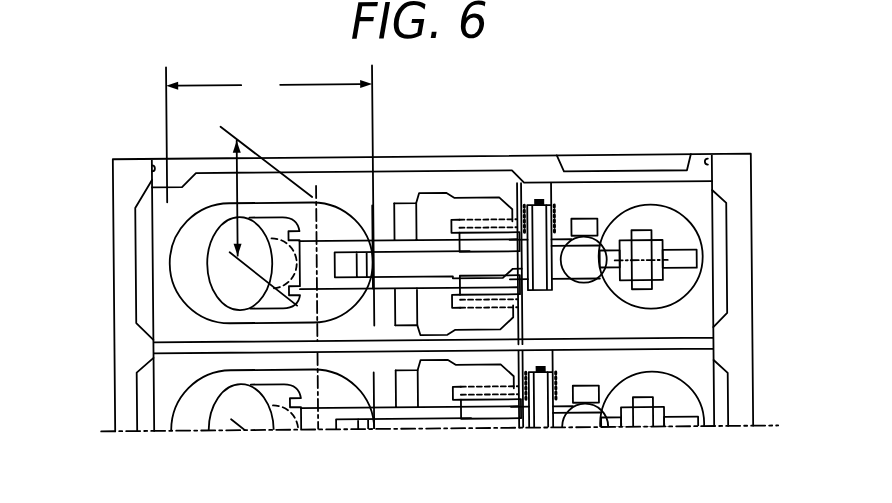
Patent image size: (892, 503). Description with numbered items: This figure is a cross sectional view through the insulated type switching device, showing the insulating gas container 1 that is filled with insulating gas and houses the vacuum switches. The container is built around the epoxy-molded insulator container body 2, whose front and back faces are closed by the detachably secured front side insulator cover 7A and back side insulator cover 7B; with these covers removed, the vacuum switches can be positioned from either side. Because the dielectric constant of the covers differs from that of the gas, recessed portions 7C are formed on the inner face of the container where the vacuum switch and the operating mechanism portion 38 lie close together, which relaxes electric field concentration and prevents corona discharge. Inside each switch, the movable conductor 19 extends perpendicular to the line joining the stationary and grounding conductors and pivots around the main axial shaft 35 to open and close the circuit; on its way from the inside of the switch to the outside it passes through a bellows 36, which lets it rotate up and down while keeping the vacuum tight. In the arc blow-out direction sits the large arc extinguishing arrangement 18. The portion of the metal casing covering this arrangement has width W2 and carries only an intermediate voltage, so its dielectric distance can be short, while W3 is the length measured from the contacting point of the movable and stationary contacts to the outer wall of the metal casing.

The insulating gas container 1 is at (307, 157).
The insulator container body 2 is at (527, 171).
The front side insulator cover 7A is at (130, 328).
The back side insulator cover 7B is at (737, 356).
The recessed portions 7C is at (148, 400).
The arc extinguishing arrangement 18 is at (183, 259).
The movable conductor 19 is at (383, 256).
The main axial shaft 35 is at (553, 210).
The bellows 36 is at (478, 222).
The operating mechanism portion 38 is at (685, 213).
The width of metal casing portion covering arc extinguishing arrangement W2 is at (242, 185).
The length from contact point to outer casing wall W3 is at (270, 196).